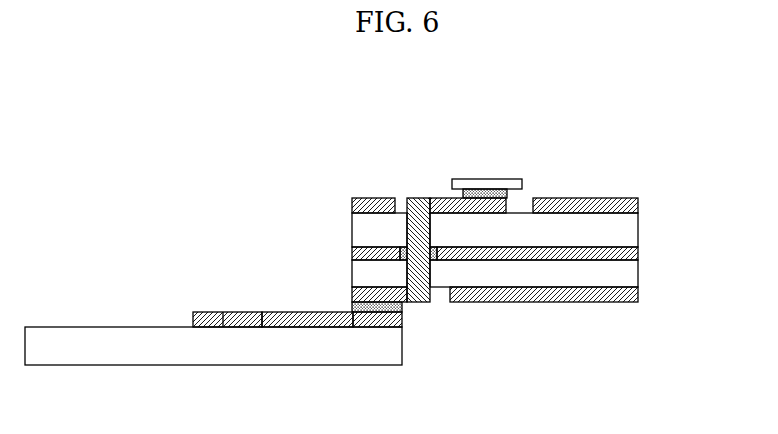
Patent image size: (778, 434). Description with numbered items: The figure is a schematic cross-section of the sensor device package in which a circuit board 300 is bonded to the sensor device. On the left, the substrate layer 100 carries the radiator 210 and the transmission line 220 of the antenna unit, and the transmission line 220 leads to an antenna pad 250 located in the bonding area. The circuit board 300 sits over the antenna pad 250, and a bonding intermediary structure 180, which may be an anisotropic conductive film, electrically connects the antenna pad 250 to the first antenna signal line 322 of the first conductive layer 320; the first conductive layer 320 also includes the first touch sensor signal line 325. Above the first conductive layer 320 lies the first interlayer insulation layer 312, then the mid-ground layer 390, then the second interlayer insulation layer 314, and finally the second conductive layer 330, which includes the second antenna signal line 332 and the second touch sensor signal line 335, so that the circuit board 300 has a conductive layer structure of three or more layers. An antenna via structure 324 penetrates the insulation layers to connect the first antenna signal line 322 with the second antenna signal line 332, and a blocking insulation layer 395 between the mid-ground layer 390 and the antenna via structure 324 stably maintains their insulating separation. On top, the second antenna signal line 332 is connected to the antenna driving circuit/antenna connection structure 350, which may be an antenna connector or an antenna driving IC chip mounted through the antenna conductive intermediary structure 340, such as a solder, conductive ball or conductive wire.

The substrate layer 100 is at (125, 357).
The radiator 210 is at (222, 313).
The transmission line 220 is at (298, 329).
The antenna pad 250 is at (378, 330).
The bonding intermediary structure 180 is at (353, 306).
The circuit board 300 is at (490, 233).
The blocking insulation layer 395 is at (404, 250).
The mid-ground layer 390 is at (627, 255).
The second interlayer insulation layer 314 is at (625, 222).
The first interlayer insulation layer 312 is at (625, 274).
The antenna via structure 324 is at (422, 262).
The first conductive layer 320 is at (514, 336).
The first antenna signal line 322 is at (387, 295).
The first touch sensor signal line 325 is at (608, 302).
The second conductive layer 330 is at (508, 169).
The second antenna signal line 332 is at (450, 206).
The second touch sensor signal line 335 is at (617, 203).
The antenna conductive intermediary structure 340 is at (497, 186).
The antenna driving circuit/antenna connection structure 350 is at (487, 192).